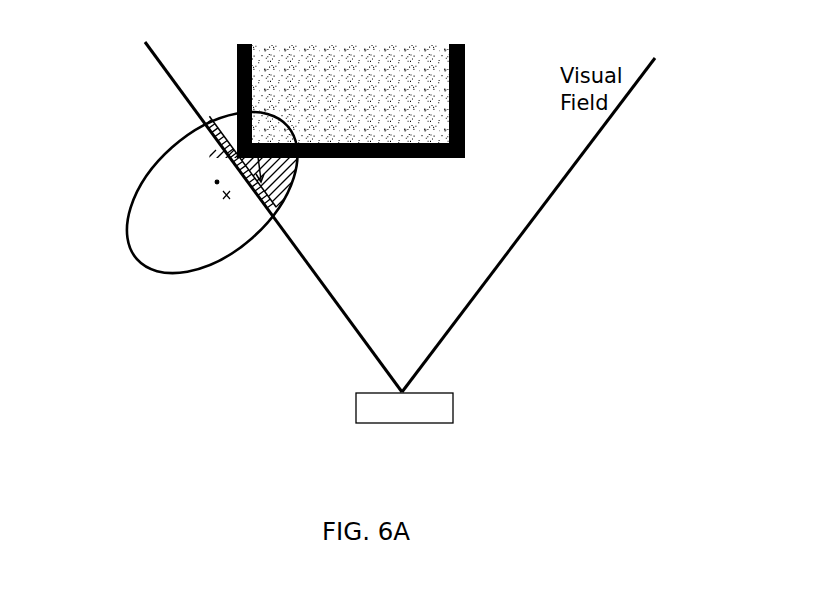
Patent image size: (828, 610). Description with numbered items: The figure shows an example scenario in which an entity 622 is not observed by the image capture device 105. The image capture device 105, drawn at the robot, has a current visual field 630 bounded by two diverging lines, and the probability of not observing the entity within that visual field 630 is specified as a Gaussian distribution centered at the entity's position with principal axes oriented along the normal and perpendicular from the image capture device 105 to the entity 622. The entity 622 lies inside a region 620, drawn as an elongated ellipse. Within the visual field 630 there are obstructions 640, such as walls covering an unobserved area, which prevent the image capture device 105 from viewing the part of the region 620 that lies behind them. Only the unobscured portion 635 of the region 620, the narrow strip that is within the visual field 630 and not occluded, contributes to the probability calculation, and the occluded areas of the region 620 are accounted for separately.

The image capture device 105 is at (465, 416).
The region 620 is at (168, 252).
The entity 622 is at (232, 186).
The visual field 630 is at (497, 230).
The unobscured portion 635 is at (237, 126).
The obstructions 640 is at (465, 82).